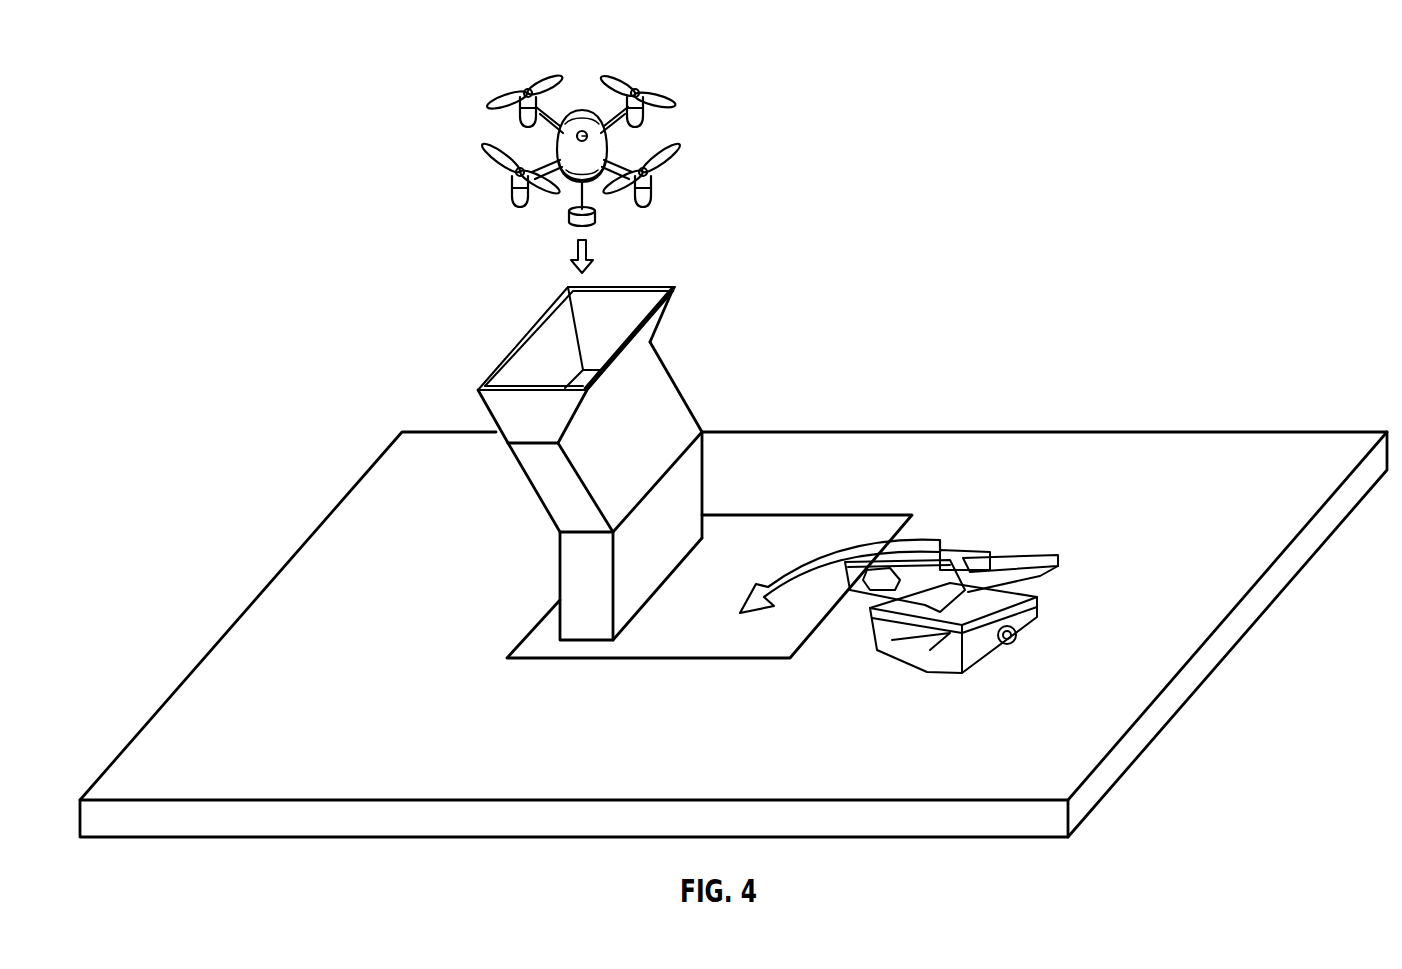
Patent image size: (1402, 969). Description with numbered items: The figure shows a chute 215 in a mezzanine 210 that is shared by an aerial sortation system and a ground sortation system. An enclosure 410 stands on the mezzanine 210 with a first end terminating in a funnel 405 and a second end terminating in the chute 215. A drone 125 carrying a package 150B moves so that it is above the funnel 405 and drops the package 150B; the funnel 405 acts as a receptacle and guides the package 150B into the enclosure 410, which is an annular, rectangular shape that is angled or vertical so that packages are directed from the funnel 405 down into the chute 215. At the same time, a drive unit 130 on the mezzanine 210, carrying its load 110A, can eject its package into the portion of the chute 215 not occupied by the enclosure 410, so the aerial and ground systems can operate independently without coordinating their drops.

The drone 125 is at (579, 110).
The package 150B is at (596, 217).
The funnel 405 is at (662, 317).
The enclosure 410 is at (547, 517).
The chute 215 is at (840, 515).
The mezzanine 210 is at (1120, 431).
The container on ground vehicle 110A is at (963, 548).
The drive unit 130 is at (1040, 612).